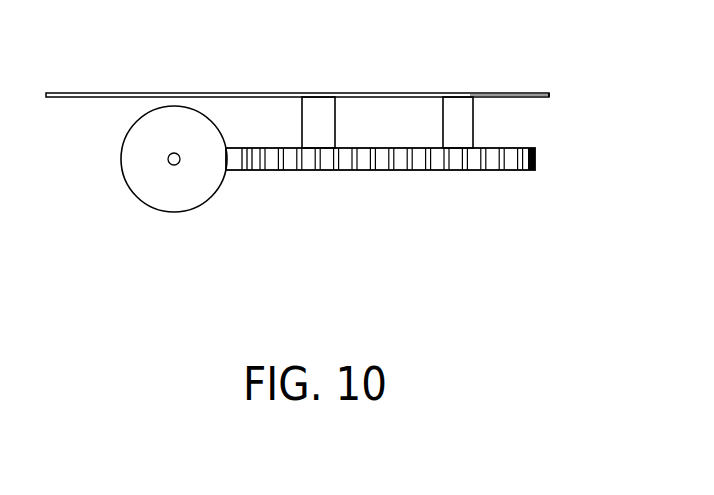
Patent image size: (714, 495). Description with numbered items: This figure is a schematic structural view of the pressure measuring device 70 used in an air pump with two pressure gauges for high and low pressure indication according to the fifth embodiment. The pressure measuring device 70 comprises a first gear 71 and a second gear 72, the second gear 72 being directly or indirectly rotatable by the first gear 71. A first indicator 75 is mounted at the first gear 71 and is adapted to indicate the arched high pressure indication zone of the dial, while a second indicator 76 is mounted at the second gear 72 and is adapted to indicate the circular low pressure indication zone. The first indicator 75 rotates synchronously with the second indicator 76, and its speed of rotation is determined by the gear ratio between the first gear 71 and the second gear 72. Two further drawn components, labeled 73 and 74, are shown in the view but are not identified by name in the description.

The pressure measuring device 70 is at (140, 185).
The first gear 71 is at (269, 172).
The second gear 72 is at (535, 163).
The bearing block 73 is at (318, 110).
The bearing block 74 is at (462, 112).
The first indicator 75 is at (249, 93).
The second indicator 76 is at (511, 93).